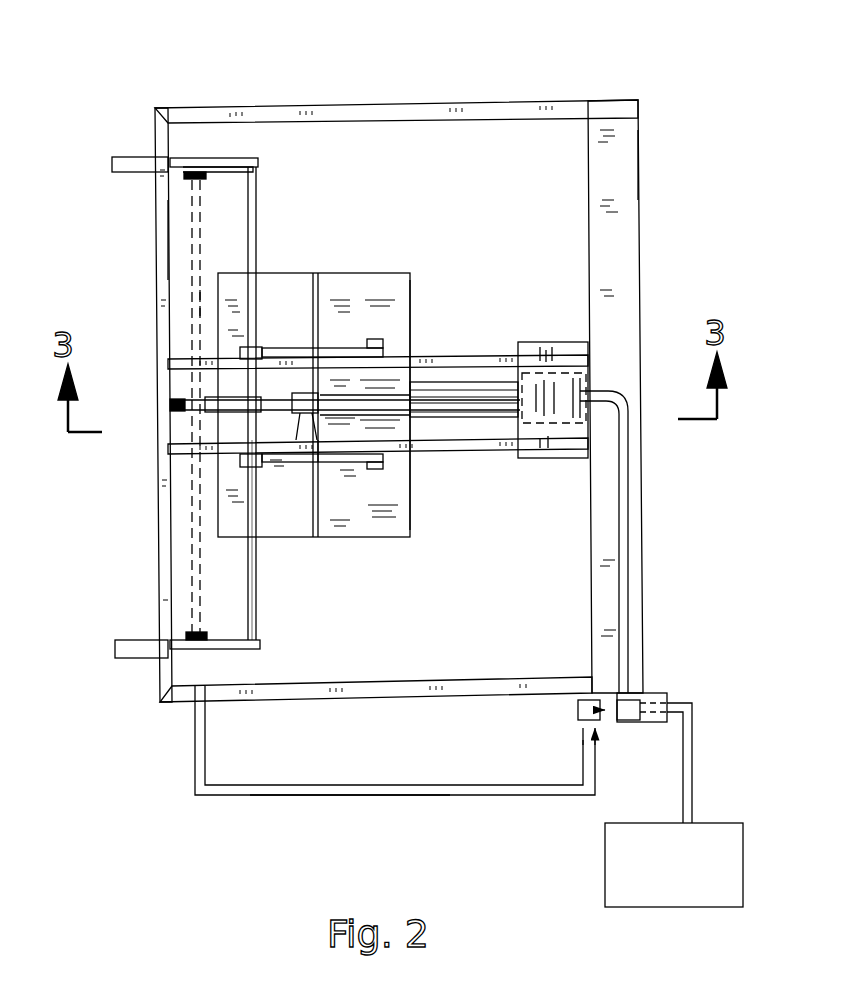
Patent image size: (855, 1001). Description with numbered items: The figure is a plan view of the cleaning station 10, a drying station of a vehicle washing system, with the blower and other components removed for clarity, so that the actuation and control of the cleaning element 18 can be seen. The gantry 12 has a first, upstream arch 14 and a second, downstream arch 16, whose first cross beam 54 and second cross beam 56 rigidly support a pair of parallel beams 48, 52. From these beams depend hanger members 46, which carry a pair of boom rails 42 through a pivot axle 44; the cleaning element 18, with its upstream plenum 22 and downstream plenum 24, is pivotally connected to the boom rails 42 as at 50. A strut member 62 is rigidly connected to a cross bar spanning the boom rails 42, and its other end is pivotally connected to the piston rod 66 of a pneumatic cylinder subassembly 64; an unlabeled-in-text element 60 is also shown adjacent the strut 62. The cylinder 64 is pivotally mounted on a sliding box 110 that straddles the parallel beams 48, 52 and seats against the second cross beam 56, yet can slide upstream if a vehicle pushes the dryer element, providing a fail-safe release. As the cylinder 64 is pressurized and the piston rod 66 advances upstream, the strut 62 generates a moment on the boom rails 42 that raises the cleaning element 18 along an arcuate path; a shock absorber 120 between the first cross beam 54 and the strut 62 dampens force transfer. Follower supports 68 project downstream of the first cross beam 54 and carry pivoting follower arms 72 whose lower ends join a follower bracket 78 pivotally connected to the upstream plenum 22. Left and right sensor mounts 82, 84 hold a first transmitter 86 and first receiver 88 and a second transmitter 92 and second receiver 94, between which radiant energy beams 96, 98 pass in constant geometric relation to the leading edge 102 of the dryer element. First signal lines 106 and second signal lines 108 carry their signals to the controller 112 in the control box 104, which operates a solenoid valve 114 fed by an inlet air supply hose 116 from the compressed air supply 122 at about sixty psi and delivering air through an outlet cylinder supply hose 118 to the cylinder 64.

The cleaning station 10 is at (356, 57).
The gantry 12 is at (468, 99).
The first, upstream arch 14 is at (163, 107).
The second, downstream arch 16 is at (598, 100).
The cleaning element 18 is at (324, 269).
The upstream plenum 22 is at (260, 275).
The downstream plenum 24 is at (411, 294).
The boom rails 42 is at (333, 350).
The pivot axle 44 is at (247, 397).
The hanger members 46 is at (260, 538).
The parallel beam 48 is at (490, 353).
The pivot connection 50 is at (388, 463).
The parallel beam 52 is at (502, 450).
The first cross beam 54 is at (160, 238).
The second cross beam 56 is at (628, 157).
The guide rod lower portion 60 is at (263, 539).
The strut member 62 is at (319, 463).
The pneumatic cylinder subassembly 64 is at (437, 385).
The piston rod 66 is at (385, 395).
The follower supports 68 is at (127, 158).
The follower arms 72 is at (228, 158).
The follower bracket 78 is at (257, 224).
The left sensor mount 82 is at (233, 176).
The right sensor mount 84 is at (234, 638).
The first, upstream transmitter 86 is at (194, 183).
The first, upstream receiver 88 is at (206, 634).
The second, downstream transmitter 92 is at (196, 180).
The second receiver 94 is at (192, 633).
The radiant energy beam 96 is at (190, 496).
The radiant energy beam 98 is at (202, 520).
The leading edge 102 is at (217, 303).
The control panel 104 is at (661, 693).
The first signal lines 106 is at (307, 797).
The second signal lines 108 is at (297, 785).
The sliding box 110 is at (566, 341).
The controller 112 is at (578, 710).
The solenoid valve 114 is at (632, 720).
The inlet air supply hose 116 is at (683, 785).
The outlet cylinder supply hose 118 is at (630, 485).
The shock absorber 120 is at (228, 413).
The compressed air supply 122 is at (605, 869).